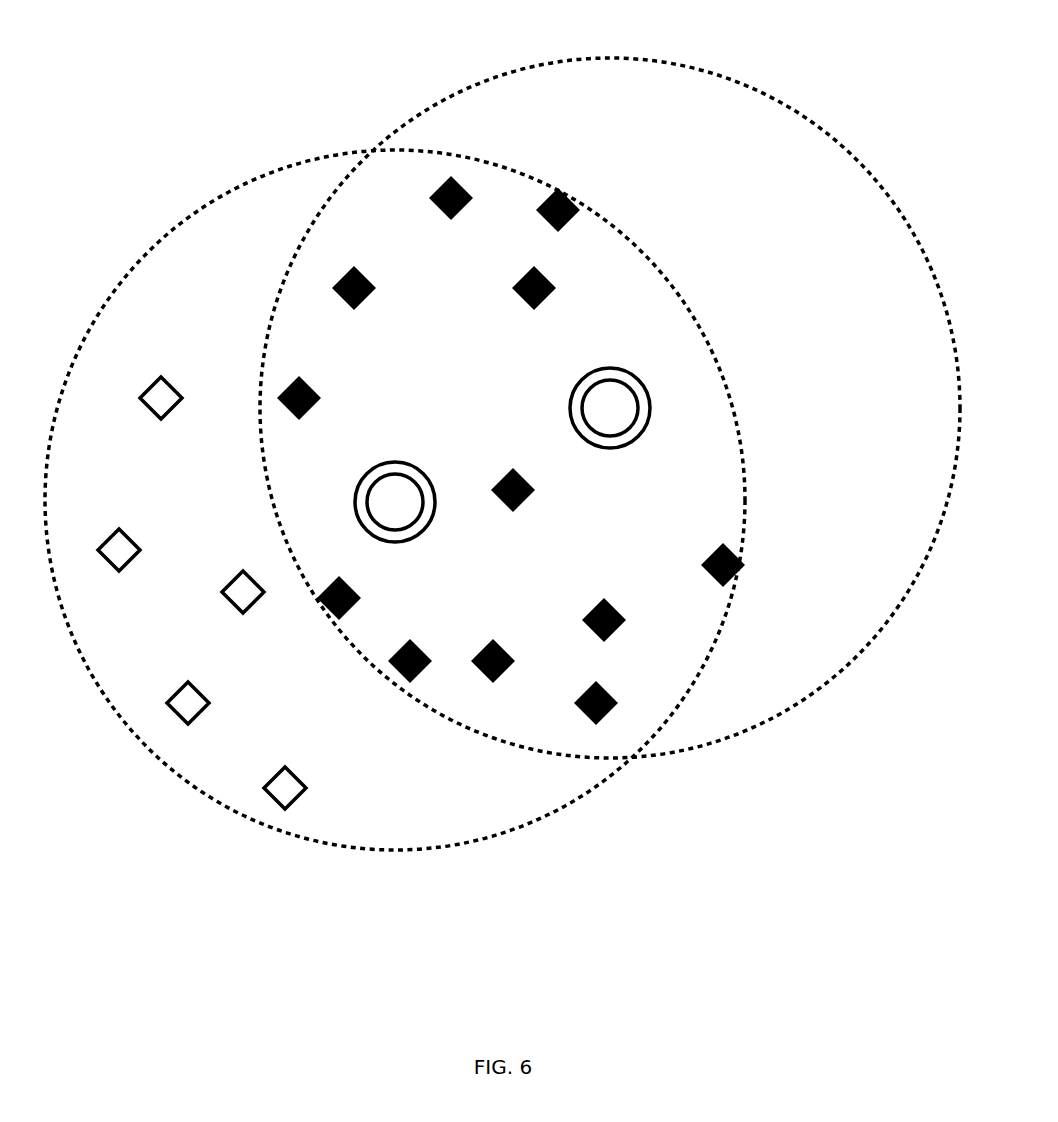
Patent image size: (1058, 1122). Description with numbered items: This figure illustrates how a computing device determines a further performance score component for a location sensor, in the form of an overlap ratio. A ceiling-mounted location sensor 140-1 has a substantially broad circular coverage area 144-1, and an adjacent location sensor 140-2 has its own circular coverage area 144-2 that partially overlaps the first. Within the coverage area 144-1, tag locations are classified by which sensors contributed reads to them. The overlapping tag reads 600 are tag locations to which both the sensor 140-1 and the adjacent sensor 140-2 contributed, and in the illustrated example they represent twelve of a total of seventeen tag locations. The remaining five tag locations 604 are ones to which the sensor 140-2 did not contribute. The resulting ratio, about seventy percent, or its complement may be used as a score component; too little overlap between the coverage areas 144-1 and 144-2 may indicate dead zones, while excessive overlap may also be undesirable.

The coverage area 144-1 is at (190, 222).
The coverage area 144-2 is at (405, 127).
The location sensor 140-1 is at (395, 462).
The location sensor 140-2 is at (610, 367).
The overlapping tag reads 600 is at (493, 683).
The tag locations 604 is at (285, 810).